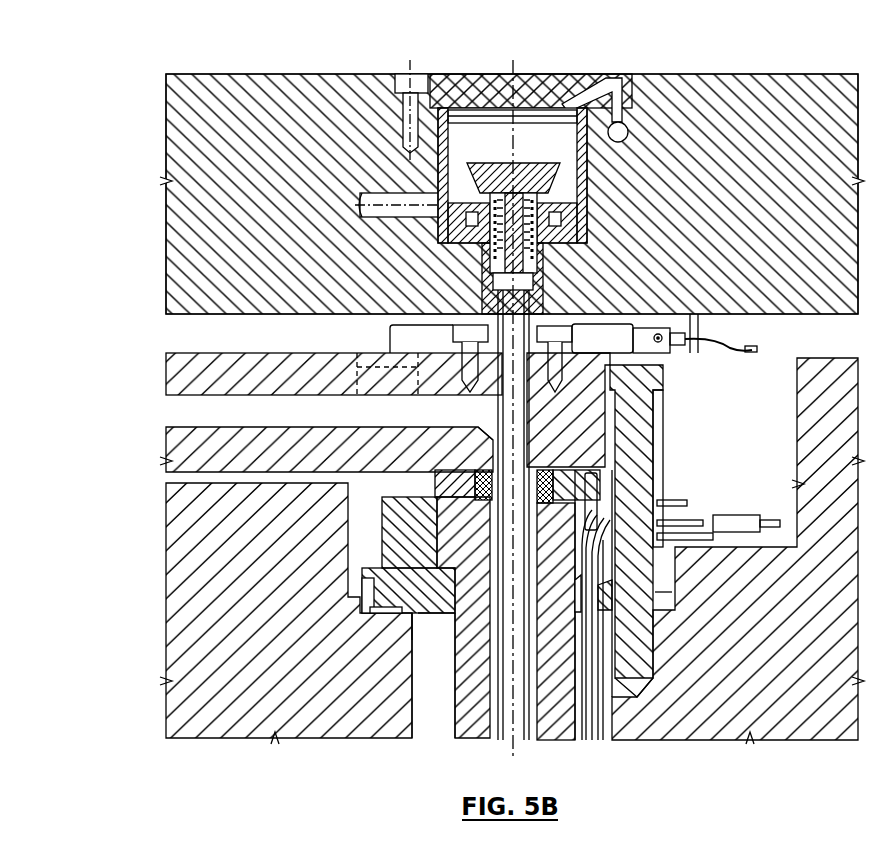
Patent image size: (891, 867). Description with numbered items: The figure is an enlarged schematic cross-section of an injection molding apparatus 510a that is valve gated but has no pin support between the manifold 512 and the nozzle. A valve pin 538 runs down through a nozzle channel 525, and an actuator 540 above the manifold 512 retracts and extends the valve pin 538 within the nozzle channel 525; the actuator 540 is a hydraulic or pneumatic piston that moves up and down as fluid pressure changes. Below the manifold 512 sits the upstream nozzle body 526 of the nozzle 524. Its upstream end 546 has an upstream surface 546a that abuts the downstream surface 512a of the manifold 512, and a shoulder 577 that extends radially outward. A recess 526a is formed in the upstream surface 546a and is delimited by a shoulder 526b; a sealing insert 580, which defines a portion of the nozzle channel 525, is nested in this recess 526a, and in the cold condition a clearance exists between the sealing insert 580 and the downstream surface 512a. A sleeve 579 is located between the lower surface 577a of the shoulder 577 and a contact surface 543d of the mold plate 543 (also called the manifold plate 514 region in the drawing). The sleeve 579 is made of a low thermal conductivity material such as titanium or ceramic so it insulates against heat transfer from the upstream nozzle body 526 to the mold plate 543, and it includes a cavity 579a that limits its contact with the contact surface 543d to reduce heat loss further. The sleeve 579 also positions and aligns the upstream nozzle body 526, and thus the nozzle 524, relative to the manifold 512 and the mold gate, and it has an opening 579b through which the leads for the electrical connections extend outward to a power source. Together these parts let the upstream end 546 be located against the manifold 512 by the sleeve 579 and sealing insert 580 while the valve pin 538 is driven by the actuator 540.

The injection molding apparatus 510a is at (367, 56).
The manifold 512 is at (195, 365).
The downstream surface of manifold 512a is at (302, 474).
The manifold plate 514 is at (308, 405).
The nozzle 524 is at (443, 700).
The nozzle channel 525 is at (541, 573).
The upstream nozzle body 526 is at (466, 724).
The recess 526a is at (478, 472).
The shoulder 526b is at (440, 478).
The valve pin 538 is at (526, 410).
The actuator 540 is at (588, 242).
The mold plate 543 is at (231, 700).
The contact surface 543d is at (407, 618).
The upstream end 546 is at (383, 530).
The upstream surface 546a is at (456, 470).
The shoulder 577 is at (437, 560).
The lower surface of shoulder 577a is at (423, 617).
The sleeve 579 is at (374, 586).
The cavity 579a is at (392, 612).
The opening 579b is at (612, 607).
The sealing insert 580 is at (550, 483).